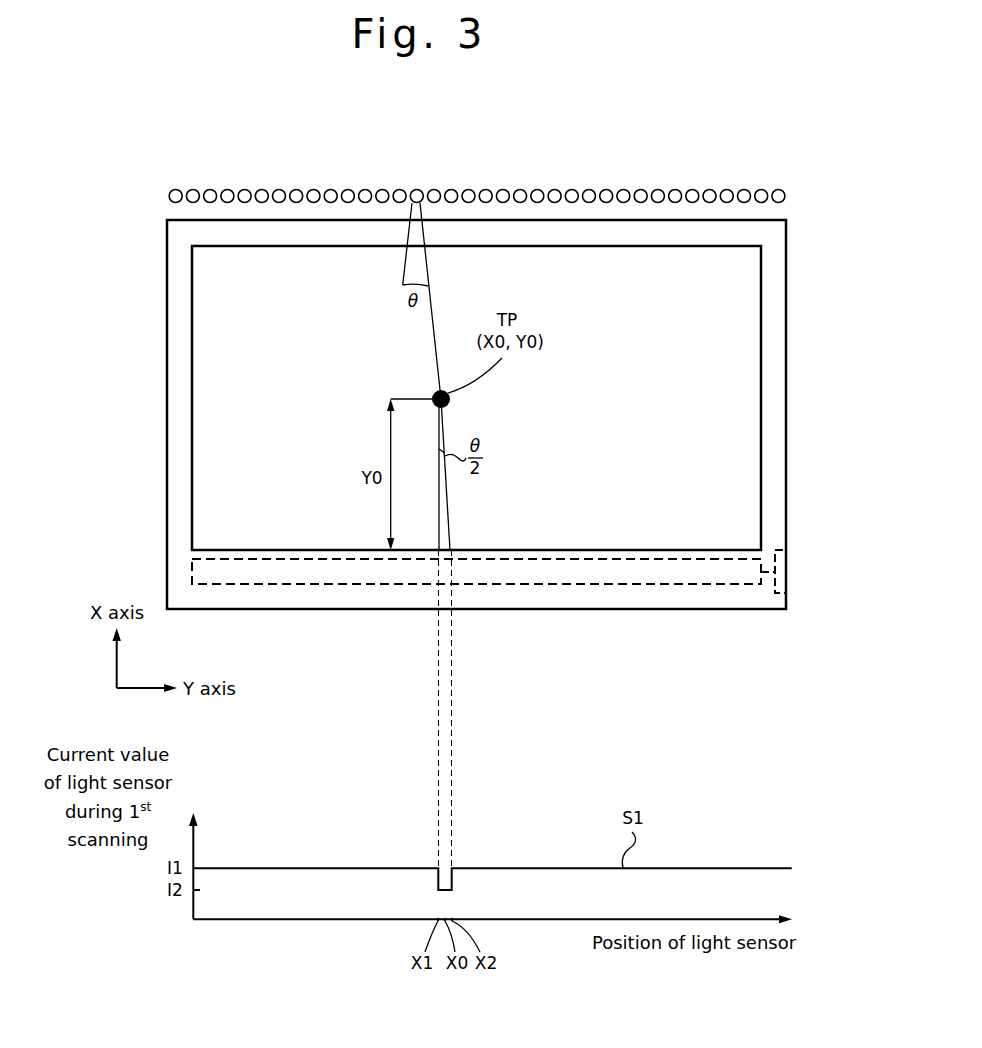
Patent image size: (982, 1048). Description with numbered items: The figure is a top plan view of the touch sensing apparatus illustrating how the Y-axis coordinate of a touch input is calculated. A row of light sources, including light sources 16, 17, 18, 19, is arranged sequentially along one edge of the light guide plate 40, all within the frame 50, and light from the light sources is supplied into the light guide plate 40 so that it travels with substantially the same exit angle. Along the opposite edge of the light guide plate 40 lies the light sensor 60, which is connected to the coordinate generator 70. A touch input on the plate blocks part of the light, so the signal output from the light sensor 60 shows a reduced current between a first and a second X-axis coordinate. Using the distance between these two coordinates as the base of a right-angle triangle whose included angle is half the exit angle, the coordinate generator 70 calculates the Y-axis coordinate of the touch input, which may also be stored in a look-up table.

The light source 16 is at (428, 189).
The light source 17 is at (447, 189).
The light source 18 is at (470, 189).
The light source 19 is at (488, 189).
The light guide plate 40 is at (761, 410).
The frame 50 is at (778, 335).
The light sensor 60 is at (645, 584).
The coordinate generator 70 is at (780, 549).